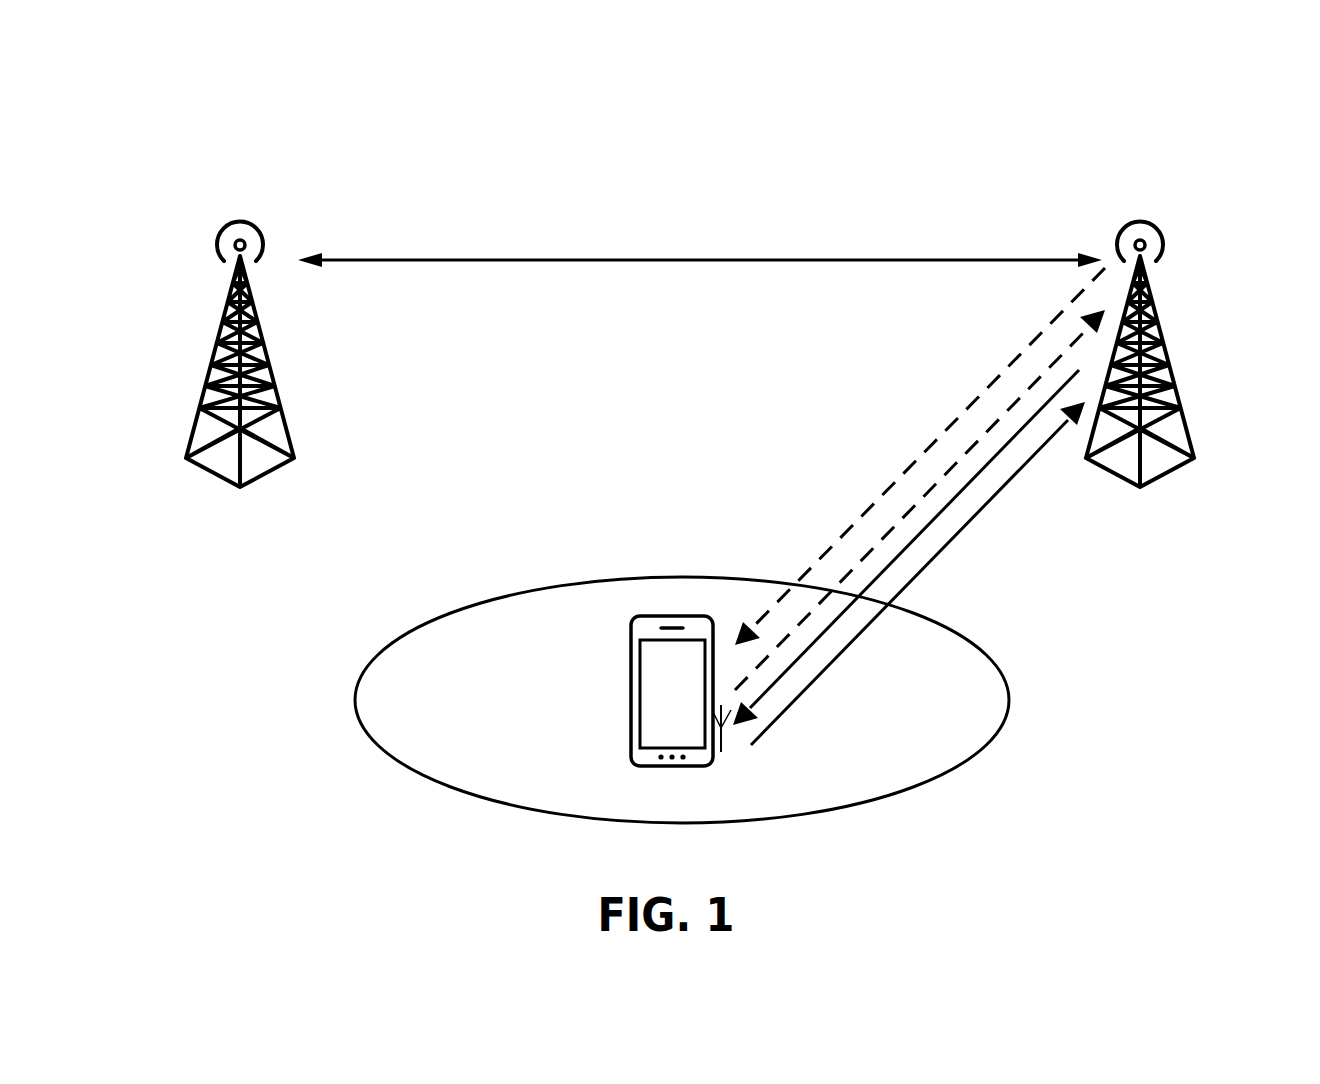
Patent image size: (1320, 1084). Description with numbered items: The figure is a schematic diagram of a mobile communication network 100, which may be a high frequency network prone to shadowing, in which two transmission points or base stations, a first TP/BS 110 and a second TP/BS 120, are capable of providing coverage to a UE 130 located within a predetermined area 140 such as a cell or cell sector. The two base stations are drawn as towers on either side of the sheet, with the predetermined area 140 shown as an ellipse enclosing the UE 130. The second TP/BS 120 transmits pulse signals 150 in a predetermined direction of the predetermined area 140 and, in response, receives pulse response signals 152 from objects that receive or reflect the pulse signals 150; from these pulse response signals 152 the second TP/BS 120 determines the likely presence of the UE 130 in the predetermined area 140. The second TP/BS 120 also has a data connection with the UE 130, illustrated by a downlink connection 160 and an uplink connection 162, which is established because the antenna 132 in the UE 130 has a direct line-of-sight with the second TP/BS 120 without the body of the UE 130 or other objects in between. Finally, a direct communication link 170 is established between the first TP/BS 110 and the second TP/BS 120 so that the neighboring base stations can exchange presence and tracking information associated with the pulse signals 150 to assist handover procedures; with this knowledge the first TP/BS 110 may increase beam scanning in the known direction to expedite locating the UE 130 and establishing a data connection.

The mobile communication network 100 is at (1138, 127).
The TP/BS-1 110 is at (214, 358).
The TP/BS-2 120 is at (1161, 328).
The UE 130 is at (632, 690).
The antenna 132 is at (721, 750).
The predetermined area 140 is at (935, 650).
The pulse signals 150 is at (838, 541).
The pulse response signals 152 is at (987, 430).
The downlink connection 160 is at (904, 552).
The uplink connection 162 is at (983, 507).
The direct communication link 170 is at (444, 261).